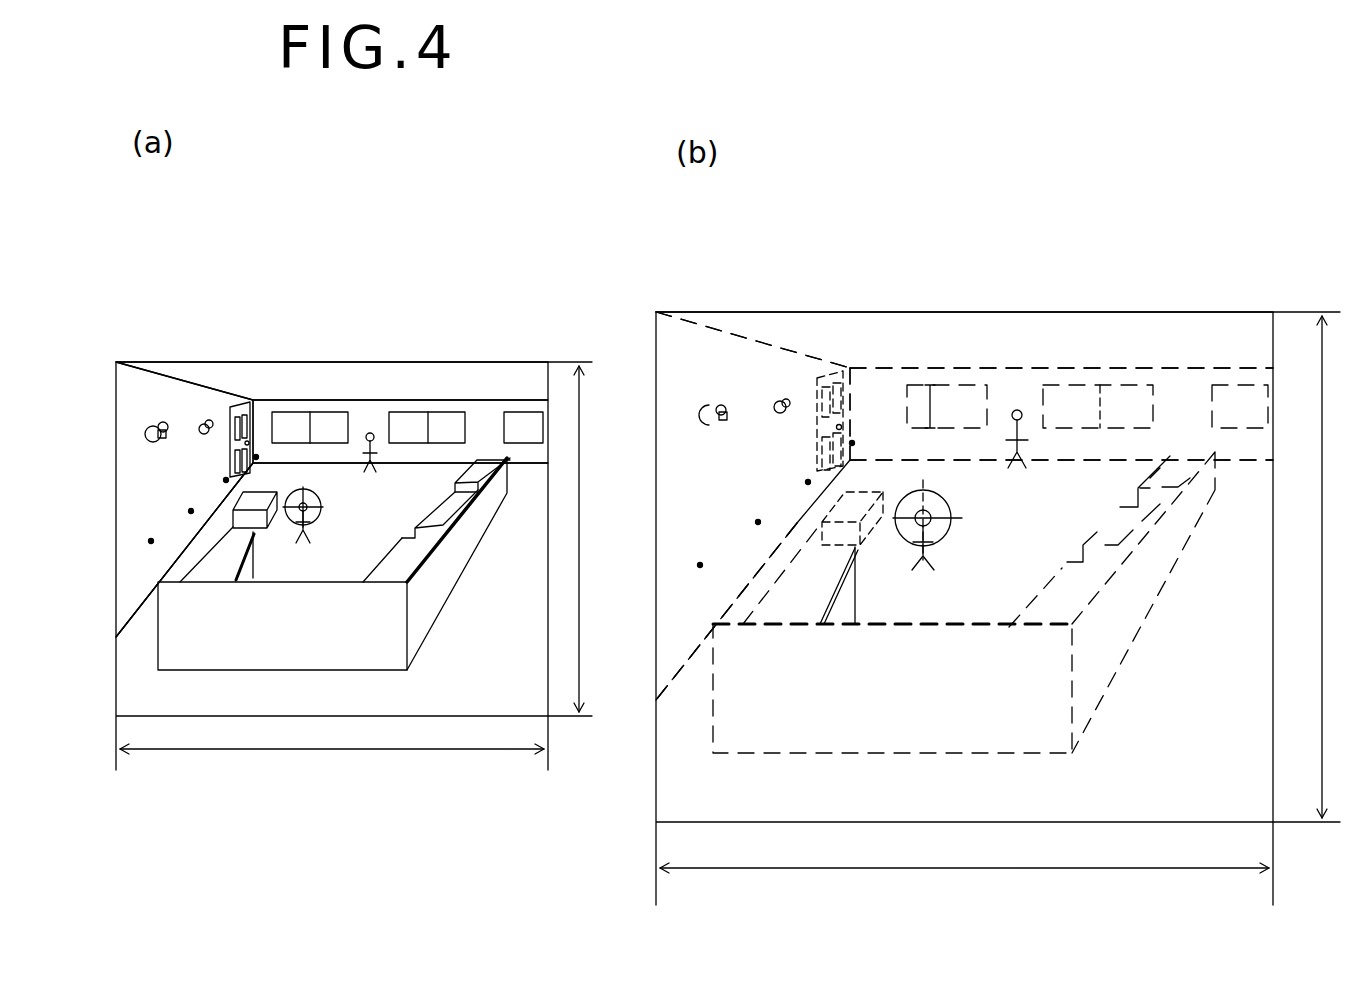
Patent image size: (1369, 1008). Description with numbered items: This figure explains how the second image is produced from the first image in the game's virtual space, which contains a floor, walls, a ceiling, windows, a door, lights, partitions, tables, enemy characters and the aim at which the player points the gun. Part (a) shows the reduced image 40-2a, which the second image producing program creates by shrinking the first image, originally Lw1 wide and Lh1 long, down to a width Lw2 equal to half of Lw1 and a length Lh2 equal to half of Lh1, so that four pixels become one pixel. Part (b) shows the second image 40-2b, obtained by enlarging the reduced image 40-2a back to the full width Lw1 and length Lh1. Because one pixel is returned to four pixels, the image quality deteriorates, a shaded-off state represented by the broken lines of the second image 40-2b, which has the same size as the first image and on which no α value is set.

The reduced image 40-2a is at (353, 338).
The second image 40-2b is at (992, 270).
The length of first image Lh1 is at (1308, 567).
The width of first image Lw1 is at (964, 853).
The length of reduced image Lh2 is at (566, 539).
The width of reduced image Lw2 is at (332, 735).